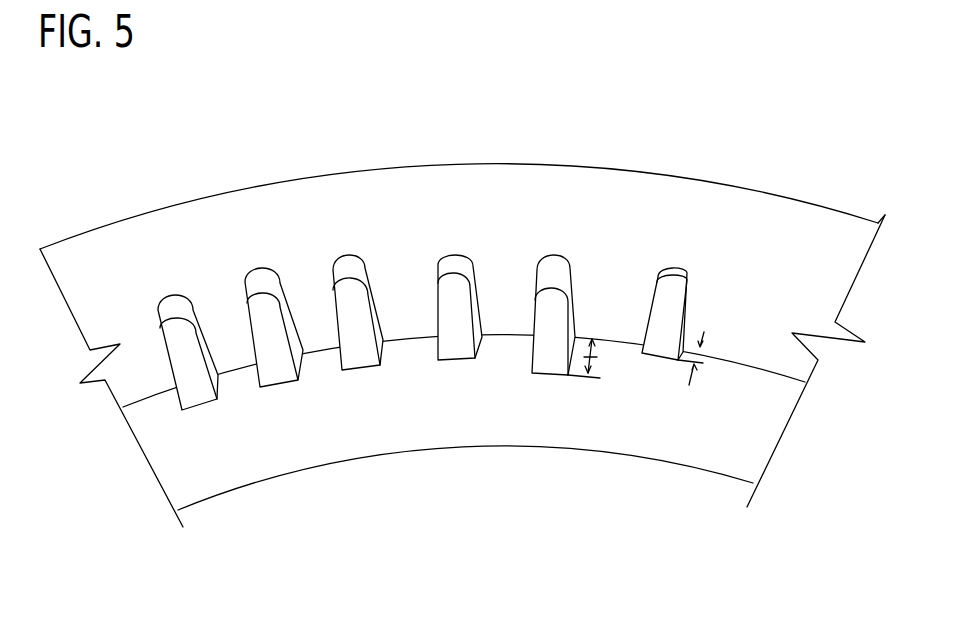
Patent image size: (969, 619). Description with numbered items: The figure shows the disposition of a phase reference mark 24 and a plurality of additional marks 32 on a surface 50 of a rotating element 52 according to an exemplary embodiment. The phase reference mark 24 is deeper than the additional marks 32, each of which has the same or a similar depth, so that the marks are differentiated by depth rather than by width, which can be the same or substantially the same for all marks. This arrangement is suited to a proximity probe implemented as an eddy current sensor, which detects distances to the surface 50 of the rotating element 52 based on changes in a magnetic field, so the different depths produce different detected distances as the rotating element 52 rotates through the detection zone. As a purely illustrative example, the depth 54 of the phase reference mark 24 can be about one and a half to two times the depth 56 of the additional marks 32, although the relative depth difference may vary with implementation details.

The phase reference mark 24 is at (563, 375).
The additional marks 32 is at (452, 265).
The surface 50 is at (638, 186).
The rotating element 52 is at (221, 103).
The depth 54 is at (597, 358).
The depth 56 is at (697, 360).